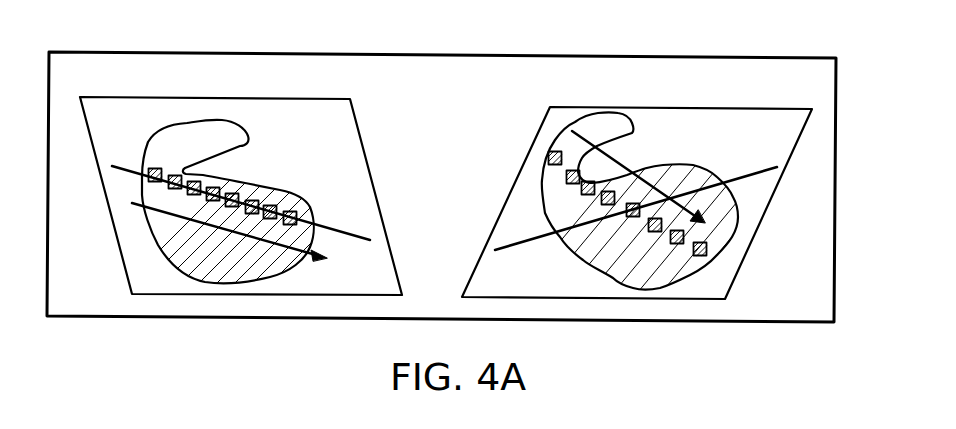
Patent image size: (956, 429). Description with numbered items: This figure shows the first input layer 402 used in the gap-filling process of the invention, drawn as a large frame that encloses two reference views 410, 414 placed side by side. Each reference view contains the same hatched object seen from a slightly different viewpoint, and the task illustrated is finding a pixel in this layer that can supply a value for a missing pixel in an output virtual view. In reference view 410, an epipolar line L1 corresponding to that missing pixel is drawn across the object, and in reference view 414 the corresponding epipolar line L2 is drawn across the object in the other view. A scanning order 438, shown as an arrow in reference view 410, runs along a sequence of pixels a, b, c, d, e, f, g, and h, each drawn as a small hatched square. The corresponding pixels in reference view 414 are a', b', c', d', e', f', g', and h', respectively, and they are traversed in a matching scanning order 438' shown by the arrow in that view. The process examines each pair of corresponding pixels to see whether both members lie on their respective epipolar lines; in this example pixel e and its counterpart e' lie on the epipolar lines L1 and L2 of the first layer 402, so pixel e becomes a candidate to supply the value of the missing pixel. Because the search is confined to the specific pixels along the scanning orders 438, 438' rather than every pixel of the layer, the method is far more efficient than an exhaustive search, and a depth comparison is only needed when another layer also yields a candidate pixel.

The input layer 402 is at (802, 57).
The reference view 410 is at (317, 97).
The reference view 414 is at (758, 106).
The scanning order 438 is at (348, 200).
The scanning order 438' is at (672, 256).
The epipolar line L1 is at (363, 235).
The epipolar line L2 is at (775, 167).
The pixel a is at (143, 147).
The pixel b is at (201, 166).
The pixel c is at (219, 170).
The pixel d is at (239, 176).
The pixel e is at (258, 181).
The pixel f is at (274, 187).
The pixel g is at (297, 197).
The pixel h is at (315, 212).
The corresponding pixel a' is at (540, 132).
The corresponding pixel b' is at (548, 193).
The corresponding pixel c' is at (559, 211).
The corresponding pixel d' is at (645, 185).
The corresponding pixel e' is at (618, 235).
The corresponding pixel f' is at (642, 249).
The corresponding pixel g' is at (663, 254).
The corresponding pixel h' is at (713, 225).